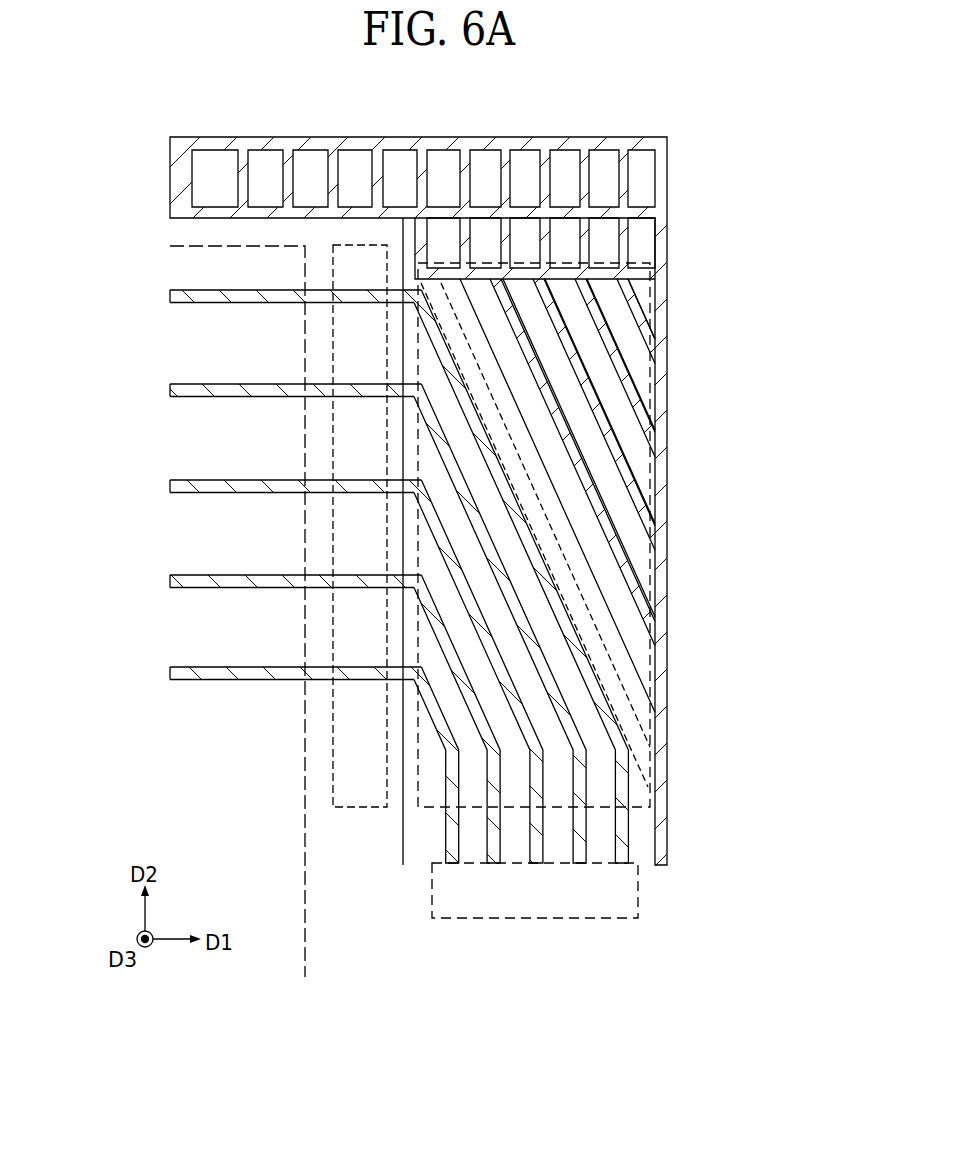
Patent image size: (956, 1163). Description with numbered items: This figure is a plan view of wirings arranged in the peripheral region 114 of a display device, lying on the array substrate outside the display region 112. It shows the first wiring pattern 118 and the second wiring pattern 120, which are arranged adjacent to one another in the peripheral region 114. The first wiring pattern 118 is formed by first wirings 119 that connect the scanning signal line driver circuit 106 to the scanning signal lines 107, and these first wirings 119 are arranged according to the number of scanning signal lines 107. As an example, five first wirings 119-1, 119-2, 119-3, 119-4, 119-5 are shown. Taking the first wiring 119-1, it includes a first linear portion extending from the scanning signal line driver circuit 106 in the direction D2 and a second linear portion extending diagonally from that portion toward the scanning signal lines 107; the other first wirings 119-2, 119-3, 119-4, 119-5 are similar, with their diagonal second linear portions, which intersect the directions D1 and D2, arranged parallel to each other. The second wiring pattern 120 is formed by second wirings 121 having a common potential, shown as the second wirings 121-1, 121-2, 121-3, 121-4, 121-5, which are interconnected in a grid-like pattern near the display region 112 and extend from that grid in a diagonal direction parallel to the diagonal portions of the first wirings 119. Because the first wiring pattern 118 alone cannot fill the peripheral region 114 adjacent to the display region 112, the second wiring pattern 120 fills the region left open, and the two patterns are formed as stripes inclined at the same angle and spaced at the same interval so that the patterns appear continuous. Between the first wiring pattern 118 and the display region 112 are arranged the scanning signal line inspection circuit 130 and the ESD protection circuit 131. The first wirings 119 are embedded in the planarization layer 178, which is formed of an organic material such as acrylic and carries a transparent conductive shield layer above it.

The scanning signal line driver circuit 106 is at (528, 920).
The scanning signal lines 107 is at (232, 304).
The display region 112 is at (210, 269).
The peripheral region 114 is at (312, 947).
The first wiring pattern 118 is at (433, 808).
The first wirings 119 is at (478, 581).
The first wiring 119-1 is at (606, 708).
The first wiring 119-2 is at (580, 737).
The first wiring 119-3 is at (541, 766).
The first wiring 119-4 is at (498, 792).
The first wiring 119-5 is at (456, 820).
The second wiring pattern 120 is at (667, 287).
The second wirings 121 is at (630, 495).
The second wiring 121-1 is at (537, 447).
The second wiring 121-2 is at (560, 420).
The second wiring 121-3 is at (600, 392).
The second wiring 121-4 is at (615, 352).
The second wiring 121-5 is at (689, 309).
The scanning signal line inspection circuit 130 is at (375, 455).
The ESD protection circuit 131 is at (360, 243).
The planarization layer 178 is at (402, 737).